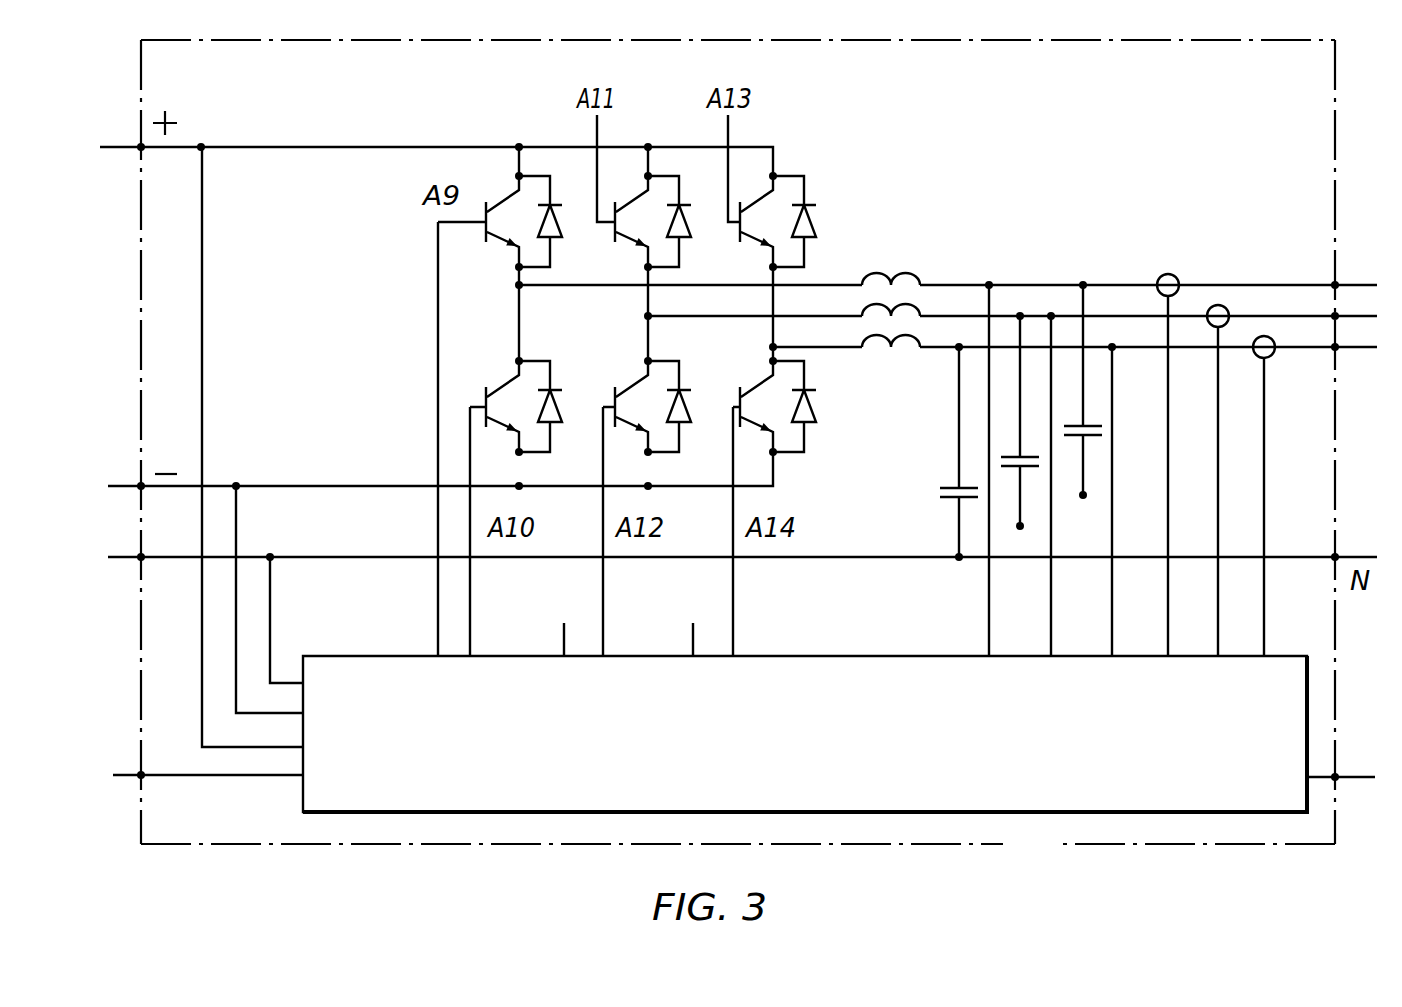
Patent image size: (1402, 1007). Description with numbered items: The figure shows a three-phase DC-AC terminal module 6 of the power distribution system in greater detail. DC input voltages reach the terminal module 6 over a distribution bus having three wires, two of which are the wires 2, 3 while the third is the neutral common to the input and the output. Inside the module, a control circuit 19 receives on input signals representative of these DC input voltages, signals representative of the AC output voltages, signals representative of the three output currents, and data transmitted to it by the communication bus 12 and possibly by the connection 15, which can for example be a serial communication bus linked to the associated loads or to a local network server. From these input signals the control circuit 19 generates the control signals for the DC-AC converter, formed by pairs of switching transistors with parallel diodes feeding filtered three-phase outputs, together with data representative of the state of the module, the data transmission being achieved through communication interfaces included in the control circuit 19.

The distribution bus wire 2 is at (121, 143).
The distribution bus wire 3 is at (122, 484).
The terminal module 6 is at (1338, 110).
The communication bus 12 is at (131, 773).
The connection 15 is at (1346, 754).
The control circuit 19 is at (805, 719).